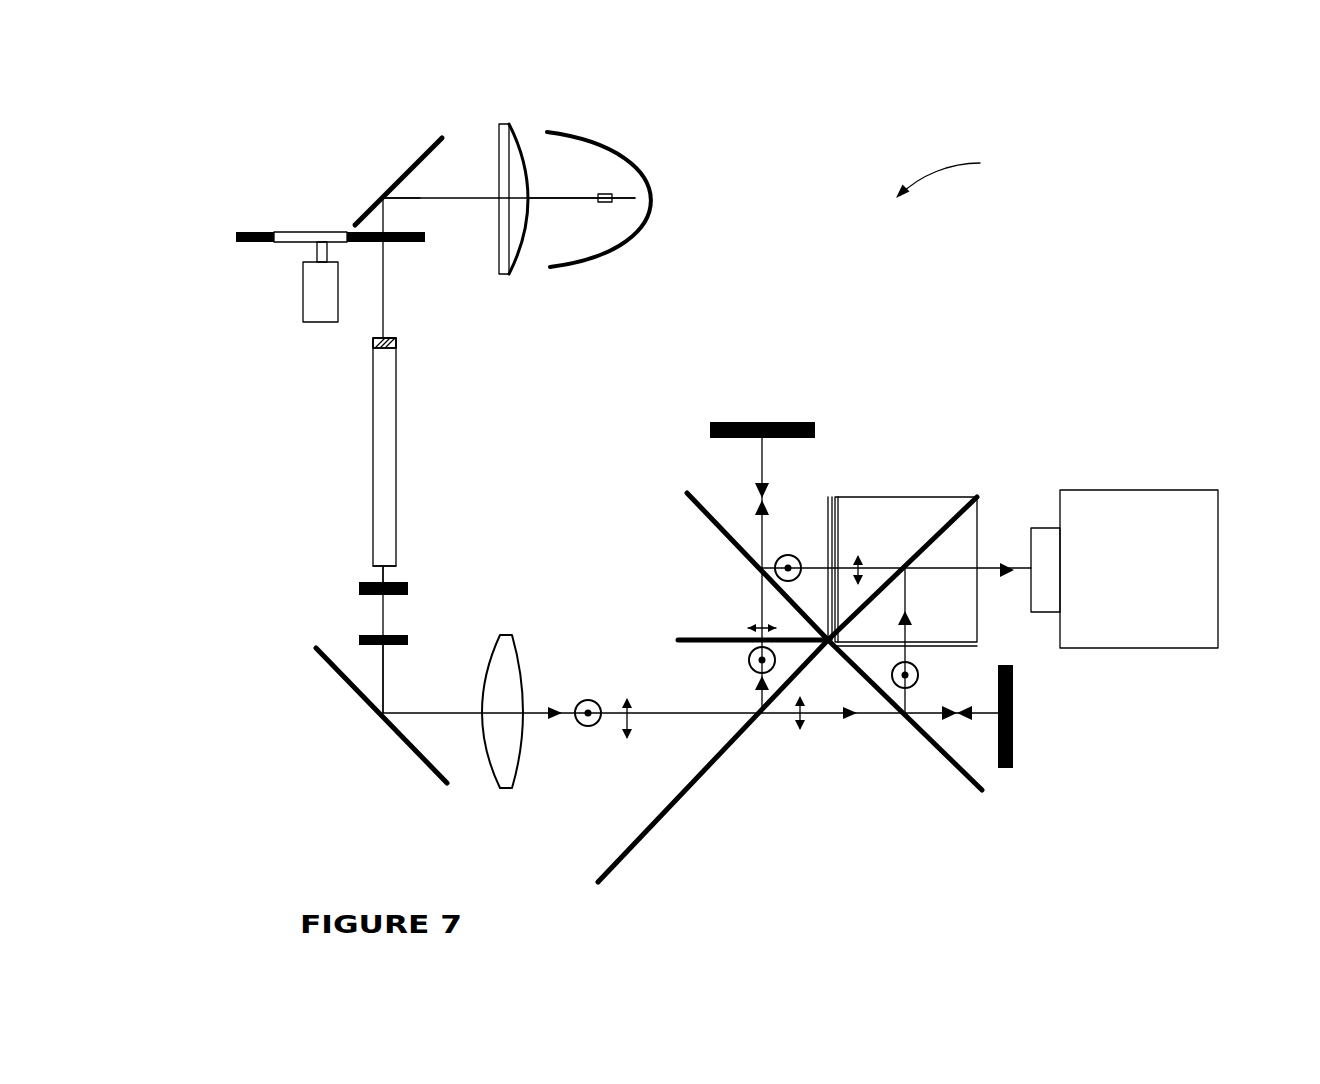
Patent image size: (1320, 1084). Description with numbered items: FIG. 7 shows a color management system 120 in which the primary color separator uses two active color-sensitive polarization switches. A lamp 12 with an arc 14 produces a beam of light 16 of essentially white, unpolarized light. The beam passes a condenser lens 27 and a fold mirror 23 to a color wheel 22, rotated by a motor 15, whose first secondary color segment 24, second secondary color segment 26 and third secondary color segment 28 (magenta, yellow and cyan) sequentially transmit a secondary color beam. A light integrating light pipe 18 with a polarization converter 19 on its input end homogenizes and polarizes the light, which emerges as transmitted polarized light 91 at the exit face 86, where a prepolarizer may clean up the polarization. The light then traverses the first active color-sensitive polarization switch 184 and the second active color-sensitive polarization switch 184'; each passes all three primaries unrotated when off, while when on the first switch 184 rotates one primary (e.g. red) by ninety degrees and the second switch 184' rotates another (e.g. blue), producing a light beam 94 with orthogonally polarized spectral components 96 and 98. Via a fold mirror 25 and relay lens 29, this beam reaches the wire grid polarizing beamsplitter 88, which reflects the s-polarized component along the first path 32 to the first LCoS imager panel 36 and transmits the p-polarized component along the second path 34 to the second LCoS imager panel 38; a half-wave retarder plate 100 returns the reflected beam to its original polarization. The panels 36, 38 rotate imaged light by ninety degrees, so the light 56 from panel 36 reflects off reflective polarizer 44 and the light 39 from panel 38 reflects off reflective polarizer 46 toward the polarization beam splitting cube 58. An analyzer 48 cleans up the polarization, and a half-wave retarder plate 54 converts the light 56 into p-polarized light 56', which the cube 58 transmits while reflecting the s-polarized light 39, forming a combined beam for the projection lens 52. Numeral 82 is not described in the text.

The lamp 12 is at (605, 202).
The arc 14 is at (597, 143).
The motor 15 is at (305, 322).
The beam of light 16 is at (560, 198).
The light integrating light pipe 18 is at (396, 424).
The polarization converter 19 is at (396, 344).
The color wheel 22 is at (268, 225).
The fold mirror 23 is at (420, 160).
The first secondary color segment 24 is at (255, 242).
The fold mirror 25 is at (333, 672).
The second secondary color segment 26 is at (307, 230).
The condenser lens 27 is at (510, 122).
The third secondary color segment 28 is at (403, 245).
The relay lens 29 is at (512, 645).
The first path 32 is at (760, 703).
The second path 34 is at (832, 713).
The first LCoS imager panel 36 is at (813, 420).
The second LCoS imager panel 38 is at (1005, 770).
The light reflecting from the blue/green imager 39 is at (918, 657).
The reflective polarizer 44 is at (693, 505).
The reflective polarizer 46 is at (953, 770).
The analyzer 48 is at (828, 516).
The projection lens 52 is at (1070, 500).
The half-wave retarder plate 54 is at (832, 495).
The light reflected by the red/blue imager 56 is at (792, 549).
The p-polarized light 56' is at (864, 549).
The polarization beam splitting cube 58 is at (917, 497).
The light pipe input 82 is at (392, 334).
The exit face 86 is at (397, 577).
The wire grid polarizing beamsplitter 88 is at (657, 827).
The transmitted polarized light 91 is at (375, 568).
The light beam 94 is at (383, 670).
The spectral component 96 is at (630, 720).
The spectral component 98 is at (588, 700).
The half-wave retarder plate 100 is at (700, 640).
The color management system 120 is at (963, 175).
The first active color-sensitive polarization switch 184 is at (412, 607).
The second active color-sensitive polarization switch 184' is at (295, 617).